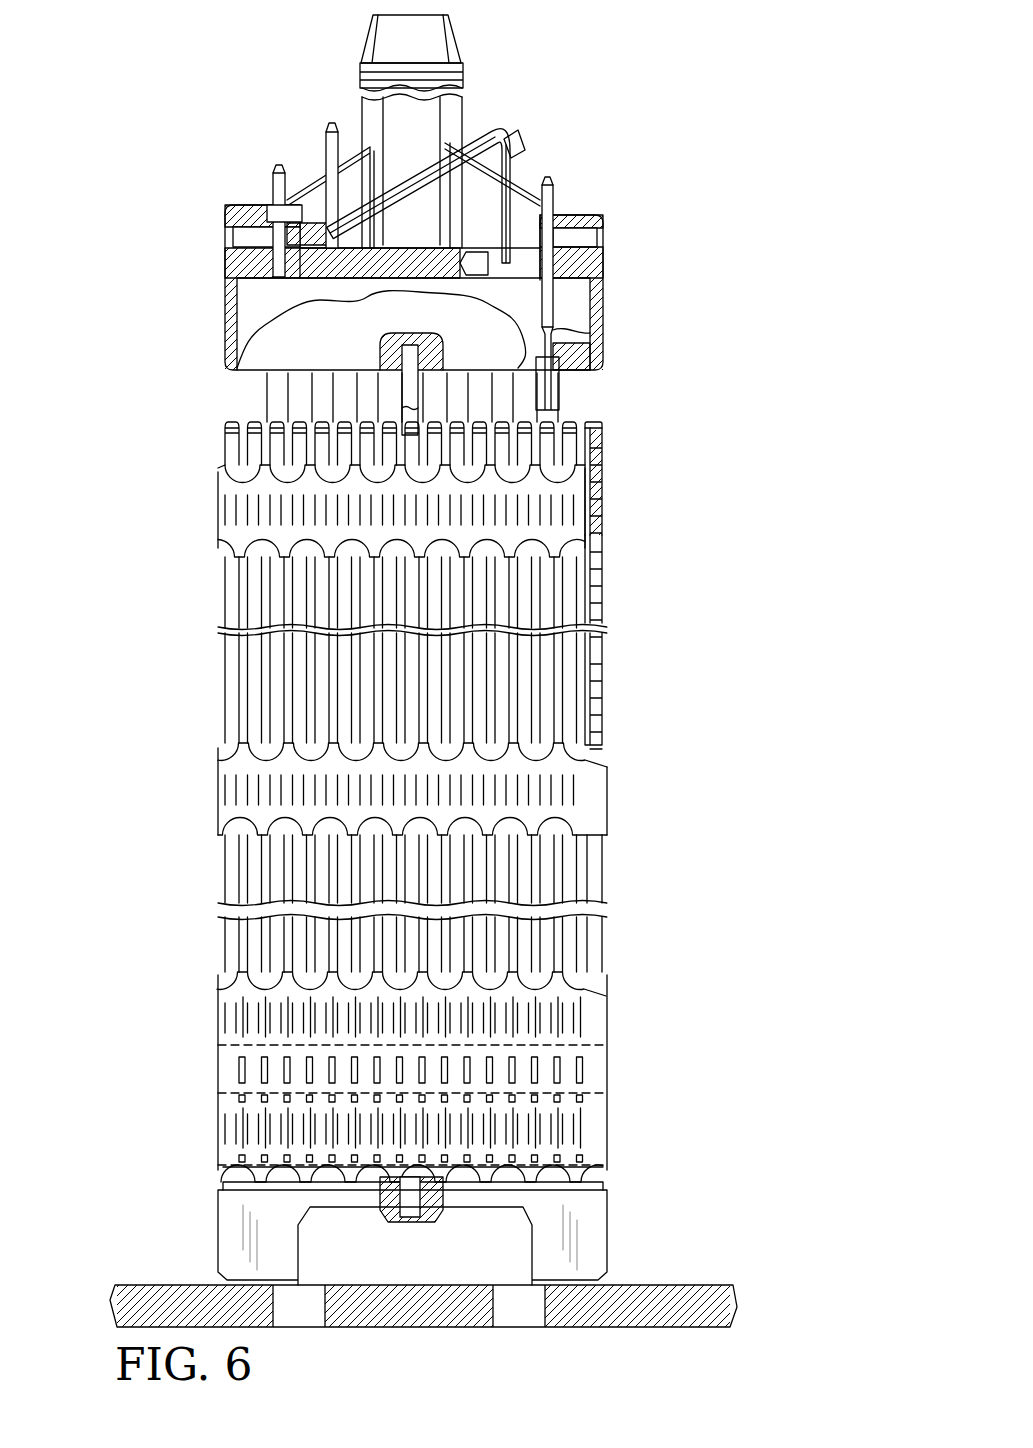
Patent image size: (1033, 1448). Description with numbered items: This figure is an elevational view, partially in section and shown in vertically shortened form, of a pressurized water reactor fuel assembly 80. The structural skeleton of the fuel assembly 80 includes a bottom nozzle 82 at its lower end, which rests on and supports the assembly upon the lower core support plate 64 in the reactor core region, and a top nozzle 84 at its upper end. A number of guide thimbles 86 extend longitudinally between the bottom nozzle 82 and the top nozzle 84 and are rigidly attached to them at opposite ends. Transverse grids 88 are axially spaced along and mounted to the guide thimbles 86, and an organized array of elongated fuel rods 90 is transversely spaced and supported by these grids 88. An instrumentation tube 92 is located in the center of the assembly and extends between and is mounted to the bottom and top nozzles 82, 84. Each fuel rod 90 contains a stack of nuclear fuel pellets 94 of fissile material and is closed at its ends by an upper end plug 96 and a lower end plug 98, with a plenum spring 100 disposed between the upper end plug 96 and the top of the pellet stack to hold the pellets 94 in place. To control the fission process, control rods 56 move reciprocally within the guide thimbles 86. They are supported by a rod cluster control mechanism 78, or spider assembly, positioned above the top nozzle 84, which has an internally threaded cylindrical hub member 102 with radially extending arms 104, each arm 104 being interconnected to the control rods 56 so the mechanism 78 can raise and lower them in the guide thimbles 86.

The control rods 56 is at (565, 333).
The lower core support plate 64 is at (650, 1285).
The rod cluster control mechanism 78 is at (524, 122).
The fuel assembly 80 is at (700, 269).
The bottom nozzle 82 is at (628, 1224).
The top nozzle 84 is at (616, 256).
The guide thimbles 86 is at (262, 408).
The transverse grids 88 is at (215, 517).
The fuel rods 90 is at (222, 692).
The instrumentation tube 92 is at (410, 1195).
The nuclear fuel pellets 94 is at (597, 593).
The upper end plug 96 is at (607, 430).
The lower end plug 98 is at (608, 1165).
The plenum spring 100 is at (606, 498).
The cylindrical hub member 102 is at (462, 112).
The arms 104 is at (357, 143).